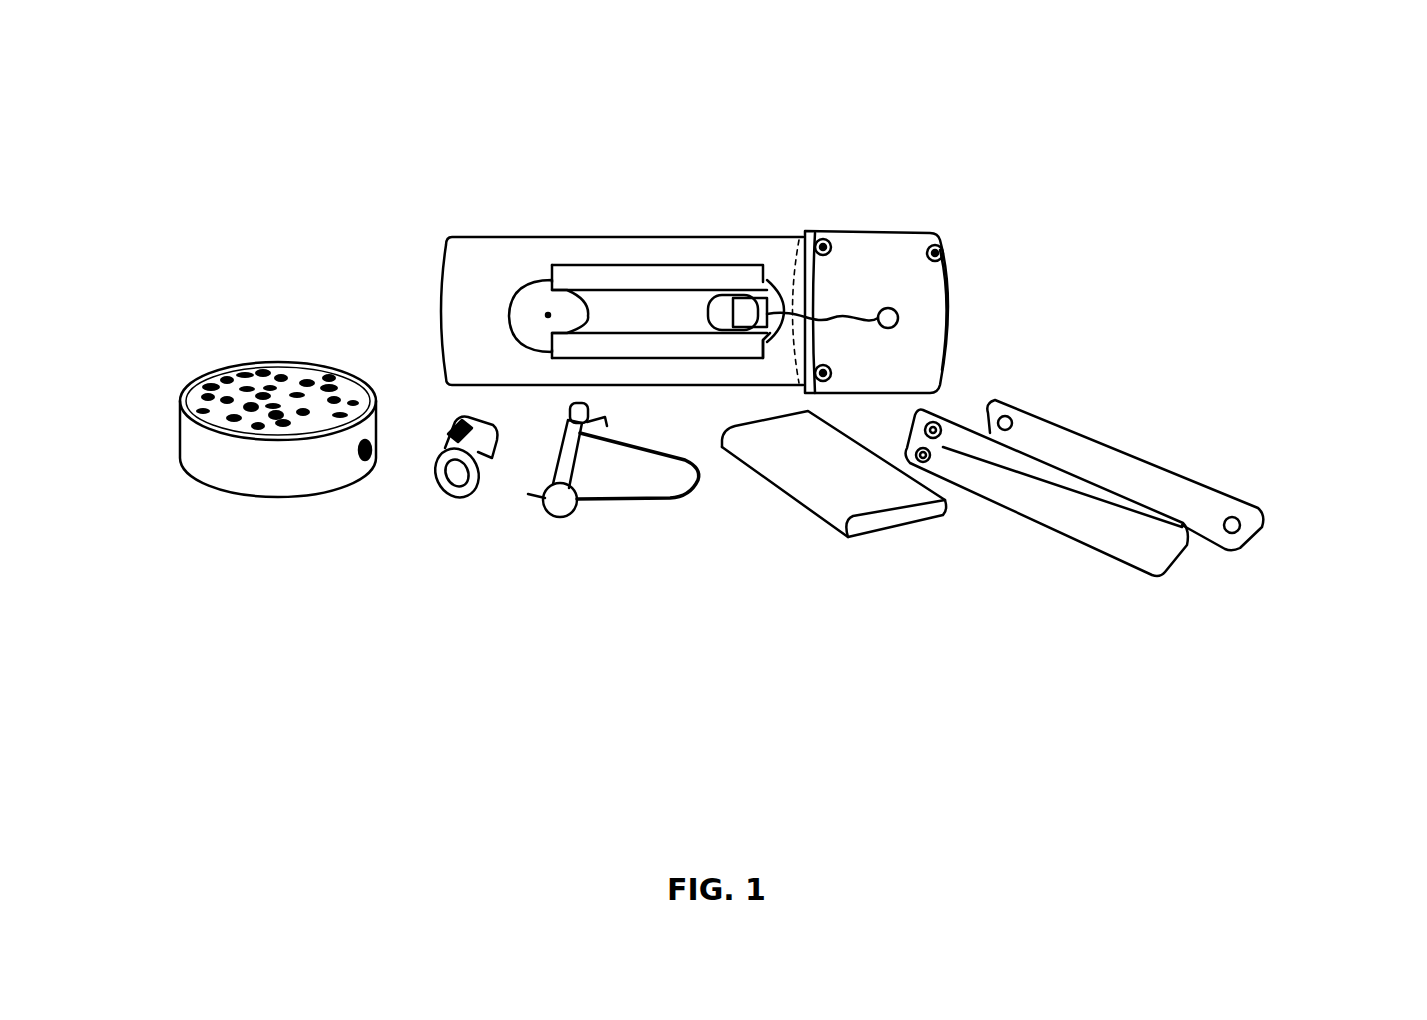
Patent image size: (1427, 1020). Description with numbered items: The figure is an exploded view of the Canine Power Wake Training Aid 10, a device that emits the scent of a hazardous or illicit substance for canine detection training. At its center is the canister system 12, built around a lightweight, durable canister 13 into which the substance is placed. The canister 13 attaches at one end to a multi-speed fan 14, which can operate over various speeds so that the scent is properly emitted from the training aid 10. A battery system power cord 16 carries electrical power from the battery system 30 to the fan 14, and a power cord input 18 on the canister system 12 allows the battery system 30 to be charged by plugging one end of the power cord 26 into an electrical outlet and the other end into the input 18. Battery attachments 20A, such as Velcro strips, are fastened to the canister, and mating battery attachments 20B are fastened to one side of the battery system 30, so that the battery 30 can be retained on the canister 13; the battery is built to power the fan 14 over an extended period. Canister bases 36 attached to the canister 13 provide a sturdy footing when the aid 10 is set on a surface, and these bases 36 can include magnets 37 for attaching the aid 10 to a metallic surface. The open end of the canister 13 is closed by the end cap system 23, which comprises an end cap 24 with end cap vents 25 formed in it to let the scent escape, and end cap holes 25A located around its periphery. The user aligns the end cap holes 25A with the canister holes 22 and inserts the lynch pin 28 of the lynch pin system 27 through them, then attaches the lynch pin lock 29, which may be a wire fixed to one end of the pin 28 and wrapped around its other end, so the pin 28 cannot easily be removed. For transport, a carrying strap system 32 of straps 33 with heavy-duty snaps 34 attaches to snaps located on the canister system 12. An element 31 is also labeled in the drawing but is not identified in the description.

The Canine Power Wake Training Aid 10 is at (1200, 157).
The canister system 12 is at (1002, 127).
The canister 13 is at (660, 237).
The multi-speed fan 14 is at (900, 262).
The battery system power cord 16 is at (933, 288).
The power cord input 18 is at (900, 321).
The battery attachments 20A is at (730, 265).
The battery attachments 20B is at (783, 493).
The canister holes 22 is at (510, 237).
The end cap system 23 is at (292, 292).
The end cap 24 is at (187, 370).
The end cap vents 25 is at (274, 425).
The end cap holes 25A is at (364, 460).
The power cord 26 is at (470, 493).
The lynch pin system 27 is at (550, 573).
The lynch pin 28 is at (572, 505).
The lynch pin lock 29 is at (672, 495).
The battery system 30 is at (847, 555).
The battery end face 31 is at (920, 527).
The carrying strap system 32 is at (1285, 478).
The straps 33 is at (1100, 560).
The heavy-duty snaps 34 is at (1237, 535).
The canister bases 36 is at (763, 336).
The magnets 37 is at (508, 308).